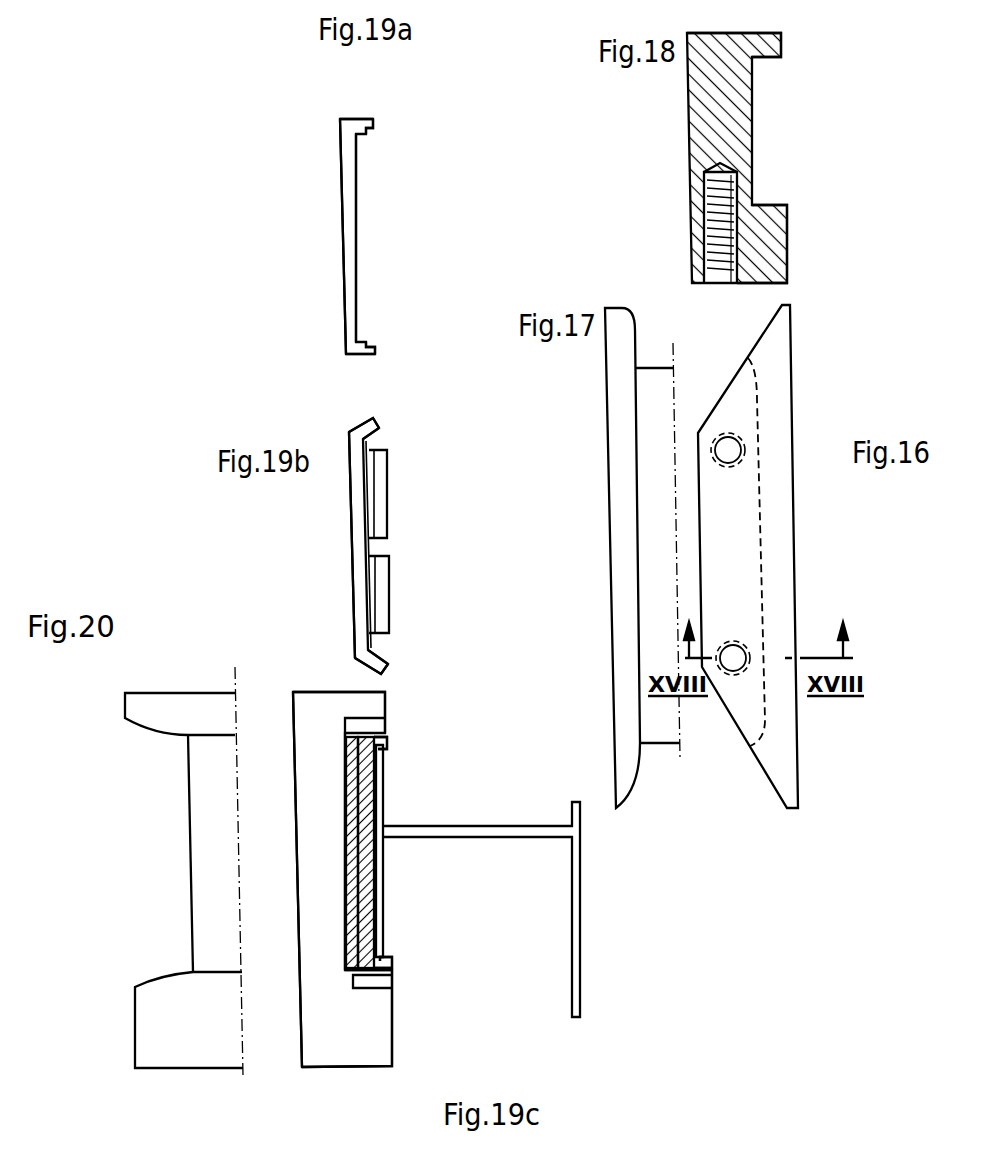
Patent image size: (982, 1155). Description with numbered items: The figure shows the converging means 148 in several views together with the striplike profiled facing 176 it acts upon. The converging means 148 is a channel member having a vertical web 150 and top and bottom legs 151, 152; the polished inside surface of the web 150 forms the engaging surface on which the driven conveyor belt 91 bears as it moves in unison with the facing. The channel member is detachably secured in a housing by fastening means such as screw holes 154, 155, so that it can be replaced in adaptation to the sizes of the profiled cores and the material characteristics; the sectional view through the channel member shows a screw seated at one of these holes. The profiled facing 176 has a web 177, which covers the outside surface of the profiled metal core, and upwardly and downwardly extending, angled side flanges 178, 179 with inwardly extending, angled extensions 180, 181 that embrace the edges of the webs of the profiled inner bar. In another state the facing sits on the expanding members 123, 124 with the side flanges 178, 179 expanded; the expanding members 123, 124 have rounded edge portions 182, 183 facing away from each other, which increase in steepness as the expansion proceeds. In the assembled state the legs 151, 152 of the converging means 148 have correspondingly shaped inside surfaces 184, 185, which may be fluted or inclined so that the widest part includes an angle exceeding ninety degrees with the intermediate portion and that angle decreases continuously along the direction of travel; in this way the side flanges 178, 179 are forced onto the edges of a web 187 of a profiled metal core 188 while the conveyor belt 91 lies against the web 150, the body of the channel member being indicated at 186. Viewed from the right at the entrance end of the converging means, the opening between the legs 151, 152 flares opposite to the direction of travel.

In FIG. 19c, the driven conveyor belt 91 is at (350, 849).
In FIG. 19b, the expanding member 123 is at (373, 480).
In FIG. 19b, the expanding member 124 is at (373, 592).
In FIG. 19c, the converging means 148 is at (330, 907).
In FIG. 16, the converging means 148 is at (745, 590).
In FIG. 19c, the vertical web 150 is at (350, 946).
In FIG. 20, the vertical web 150 is at (197, 829).
In FIG. 18, the vertical web 150 is at (740, 120).
In FIG. 19c, the top leg 151 is at (376, 706).
In FIG. 20, the top leg 151 is at (170, 705).
In FIG. 18, the top leg 151 is at (770, 46).
In FIG. 17, the top leg 151 is at (622, 548).
In FIG. 16, the top leg 151 is at (778, 530).
In FIG. 19c, the bottom leg 152 is at (385, 1030).
In FIG. 20, the bottom leg 152 is at (165, 990).
In FIG. 18, the bottom leg 152 is at (772, 247).
In FIG. 18, the screw hole 154 is at (722, 272).
In FIG. 16, the screw hole 154 is at (736, 656).
In FIG. 16, the screw hole 155 is at (730, 451).
In FIG. 19a, the striplike profiled facing 176 is at (339, 203).
In FIG. 19b, the striplike profiled facing 176 is at (349, 533).
In FIG. 19c, the striplike profiled facing 176 is at (375, 852).
In FIG. 19a, the web 177 is at (350, 275).
In FIG. 19b, the web 177 is at (358, 597).
In FIG. 19a, the side flange 178 is at (353, 122).
In FIG. 19b, the side flange 178 is at (360, 427).
In FIG. 19c, the side flange 178 is at (388, 743).
In FIG. 19a, the side flange 179 is at (364, 354).
In FIG. 19b, the side flange 179 is at (362, 664).
In FIG. 19c, the side flange 179 is at (395, 963).
In FIG. 19a, the angled extension 180 is at (376, 124).
In FIG. 19a, the angled extension 181 is at (376, 344).
In FIG. 19b, the rounded edge portion 182 is at (376, 441).
In FIG. 19b, the rounded edge portion 183 is at (374, 651).
In FIG. 19c, the inside surface 184 is at (376, 728).
In FIG. 19c, the inside surface 185 is at (382, 980).
In FIG. 19c, the profile body 186 is at (310, 793).
In FIG. 19c, the web 187 is at (379, 812).
In FIG. 19c, the profiled metal core 188 is at (550, 878).